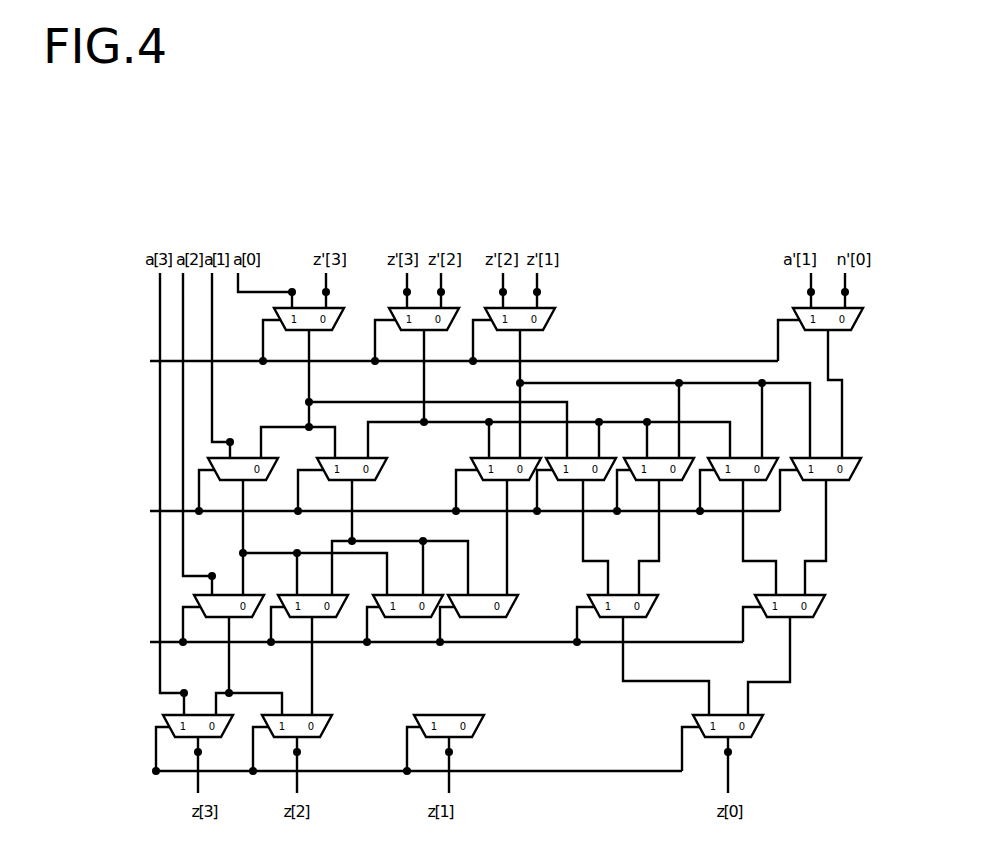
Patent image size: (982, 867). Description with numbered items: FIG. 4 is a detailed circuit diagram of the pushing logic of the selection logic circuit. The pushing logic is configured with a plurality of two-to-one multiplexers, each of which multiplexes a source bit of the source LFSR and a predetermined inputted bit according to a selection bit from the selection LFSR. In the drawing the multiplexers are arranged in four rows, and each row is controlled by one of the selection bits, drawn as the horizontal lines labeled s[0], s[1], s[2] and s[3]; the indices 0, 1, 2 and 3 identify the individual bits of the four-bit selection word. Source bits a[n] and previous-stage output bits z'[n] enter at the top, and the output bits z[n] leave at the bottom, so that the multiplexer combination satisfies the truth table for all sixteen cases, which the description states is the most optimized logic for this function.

The select signal line s[0] 0 is at (440, 359).
The select signal line s[1] 1 is at (441, 509).
The select signal line s[2] 2 is at (422, 640).
The select signal line s[3] 3 is at (392, 769).